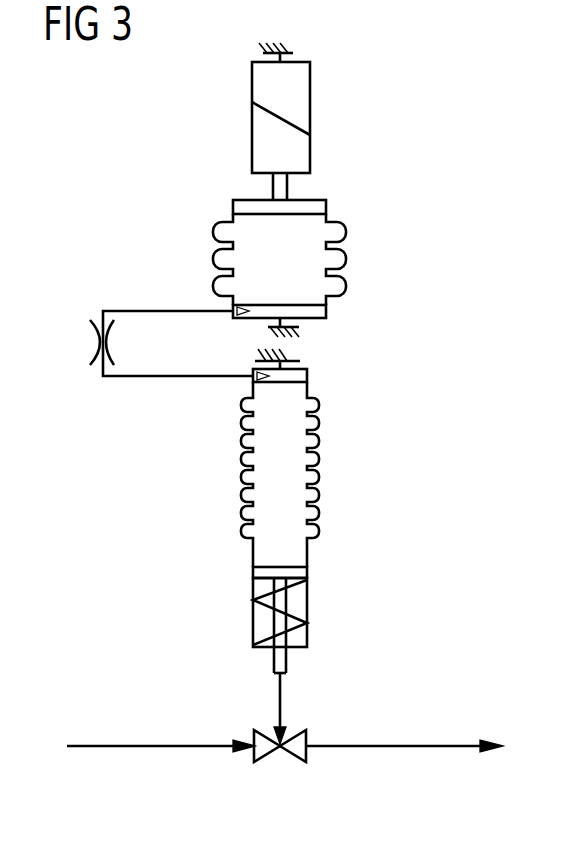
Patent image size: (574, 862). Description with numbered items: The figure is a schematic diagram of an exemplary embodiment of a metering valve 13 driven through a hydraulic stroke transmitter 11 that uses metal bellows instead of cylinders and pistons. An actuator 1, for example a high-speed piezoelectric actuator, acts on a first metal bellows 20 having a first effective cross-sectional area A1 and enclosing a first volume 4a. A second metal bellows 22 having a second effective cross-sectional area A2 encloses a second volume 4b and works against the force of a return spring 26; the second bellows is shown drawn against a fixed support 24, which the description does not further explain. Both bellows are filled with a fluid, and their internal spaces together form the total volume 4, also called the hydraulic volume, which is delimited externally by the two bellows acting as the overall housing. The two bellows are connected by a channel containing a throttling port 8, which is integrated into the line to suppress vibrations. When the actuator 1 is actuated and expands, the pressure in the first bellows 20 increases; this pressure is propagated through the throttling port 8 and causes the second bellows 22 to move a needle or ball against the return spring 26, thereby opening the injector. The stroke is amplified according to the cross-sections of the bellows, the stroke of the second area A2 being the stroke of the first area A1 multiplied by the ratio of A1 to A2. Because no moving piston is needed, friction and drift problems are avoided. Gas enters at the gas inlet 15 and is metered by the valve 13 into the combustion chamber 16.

The actuator 1 is at (297, 102).
The total volume 4 is at (223, 389).
The first volume 4a is at (257, 255).
The second volume 4b is at (277, 463).
The throttling port 8 is at (95, 342).
The stroke transmitter 11 is at (279, 436).
The metering valve 13 is at (290, 757).
The gas inlet 15 is at (147, 743).
The combustion chamber 16 is at (402, 743).
The first metal bellows 20 is at (338, 261).
The second metal bellows 22 is at (313, 488).
The fixed support 24 is at (315, 347).
The return spring 26 is at (294, 586).
The first effective cross-sectional area A1 is at (276, 217).
The second effective cross-sectional area A2 is at (280, 565).